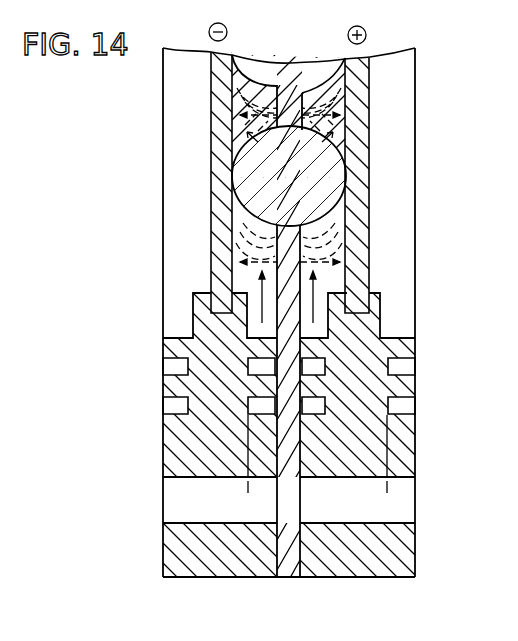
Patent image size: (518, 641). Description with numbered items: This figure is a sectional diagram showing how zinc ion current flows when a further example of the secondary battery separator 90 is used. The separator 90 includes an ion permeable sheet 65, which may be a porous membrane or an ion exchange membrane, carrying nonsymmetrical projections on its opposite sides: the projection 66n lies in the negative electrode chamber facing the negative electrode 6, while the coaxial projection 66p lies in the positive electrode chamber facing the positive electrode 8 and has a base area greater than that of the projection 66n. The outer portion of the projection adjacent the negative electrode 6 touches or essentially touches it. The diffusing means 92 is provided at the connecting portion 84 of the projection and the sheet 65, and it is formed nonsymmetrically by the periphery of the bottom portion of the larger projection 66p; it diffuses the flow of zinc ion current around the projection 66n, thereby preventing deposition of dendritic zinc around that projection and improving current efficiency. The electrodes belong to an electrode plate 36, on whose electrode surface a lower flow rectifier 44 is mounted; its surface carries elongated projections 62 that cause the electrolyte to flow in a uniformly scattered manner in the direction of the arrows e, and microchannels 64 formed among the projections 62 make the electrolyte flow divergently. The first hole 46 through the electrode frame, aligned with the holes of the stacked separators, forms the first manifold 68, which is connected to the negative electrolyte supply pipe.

The secondary battery separator 90 is at (303, 58).
The connecting portion 84 is at (240, 118).
The diffusing means 92 is at (326, 136).
The projection in the negative electrode chamber 66n is at (240, 170).
The projection in the positive electrode chamber 66p is at (312, 172).
The positive electrode 8 is at (358, 198).
The negative electrode 6 is at (214, 214).
The ion permeable sheet 65 is at (305, 292).
The arrows indicating electrolyte flow direction e is at (265, 279).
The elongated projections 62 is at (416, 350).
The microchannels 64 is at (418, 404).
The lower flow rectifier 44 is at (405, 453).
The first manifold 68 is at (415, 500).
The first hole 46 is at (383, 522).
The electrode plate 36 is at (225, 578).